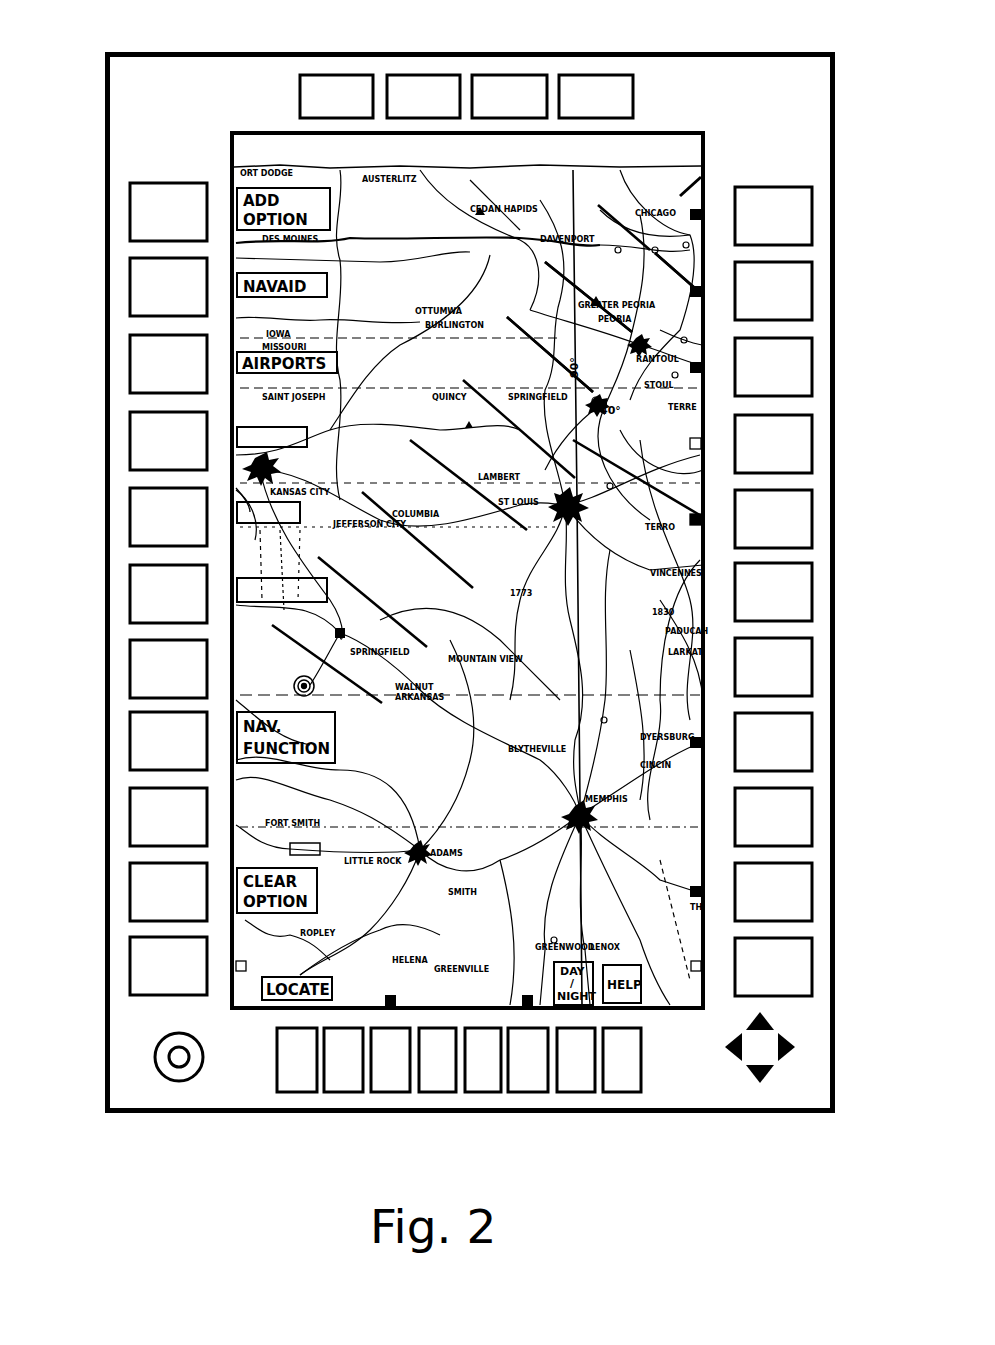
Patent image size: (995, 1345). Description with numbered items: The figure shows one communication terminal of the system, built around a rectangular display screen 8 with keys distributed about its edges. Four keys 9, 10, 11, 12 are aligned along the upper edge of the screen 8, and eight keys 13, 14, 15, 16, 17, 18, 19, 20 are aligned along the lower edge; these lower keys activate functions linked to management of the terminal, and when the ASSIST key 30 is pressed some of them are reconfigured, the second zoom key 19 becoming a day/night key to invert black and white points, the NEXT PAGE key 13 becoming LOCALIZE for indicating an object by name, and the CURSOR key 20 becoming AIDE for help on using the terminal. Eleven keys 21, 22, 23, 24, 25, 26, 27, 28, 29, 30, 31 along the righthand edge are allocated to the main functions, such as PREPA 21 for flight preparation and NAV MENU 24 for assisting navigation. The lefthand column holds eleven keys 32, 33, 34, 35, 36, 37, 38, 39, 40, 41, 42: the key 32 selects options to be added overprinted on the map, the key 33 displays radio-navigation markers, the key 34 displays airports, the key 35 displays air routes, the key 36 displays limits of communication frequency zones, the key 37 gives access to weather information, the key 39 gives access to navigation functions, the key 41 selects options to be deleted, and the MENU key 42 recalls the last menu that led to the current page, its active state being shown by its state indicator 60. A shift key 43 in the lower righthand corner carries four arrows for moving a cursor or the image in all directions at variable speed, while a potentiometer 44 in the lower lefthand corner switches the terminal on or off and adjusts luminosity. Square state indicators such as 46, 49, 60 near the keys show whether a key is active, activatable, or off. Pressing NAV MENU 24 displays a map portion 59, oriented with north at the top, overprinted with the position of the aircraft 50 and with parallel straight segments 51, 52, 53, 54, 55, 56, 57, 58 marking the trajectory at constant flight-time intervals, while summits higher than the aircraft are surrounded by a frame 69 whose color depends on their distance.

The display screen 8 is at (705, 131).
The key 9 is at (330, 88).
The key 10 is at (415, 88).
The key 11 is at (503, 88).
The key 12 is at (590, 88).
The NEXT PAGE key 13 is at (288, 1093).
The key 14 is at (342, 1093).
The key 15 is at (385, 1093).
The key 16 is at (440, 1093).
The key 17 is at (472, 1093).
The key 18 is at (516, 1093).
The ZOOM 2 key 19 is at (565, 1093).
The CURSOR key 20 is at (612, 1093).
The PREPA key 21 is at (802, 230).
The key 22 is at (797, 297).
The key 23 is at (800, 366).
The NAV MENU key 24 is at (800, 440).
The key 25 is at (800, 500).
The key 26 is at (800, 577).
The key 27 is at (800, 660).
The key 28 is at (800, 748).
The key 29 is at (798, 828).
The ASSIST key 30 is at (800, 907).
The key 31 is at (797, 978).
The OPTIONS TO BE ADDED key 32 is at (140, 205).
The RADIO NAV. key 33 is at (140, 282).
The AIRPORTS key 34 is at (140, 358).
The ROUTES key 35 is at (140, 436).
The LIMITS key 36 is at (140, 512).
The METEO key 37 is at (140, 588).
The key 38 is at (140, 665).
The NAVIGATION FUNCTIONS key 39 is at (140, 742).
The key 40 is at (140, 822).
The OPTIONS TO BE DELETED key 41 is at (140, 892).
The MENU key 42 is at (140, 966).
The shift key 43 is at (758, 1055).
The potentiometer 44 is at (178, 1070).
The state indicator 46 is at (703, 968).
The state indicator 49 is at (697, 449).
The position of the aircraft 50 is at (294, 689).
The straight segment 51 is at (275, 623).
The straight segment 52 is at (318, 557).
The straight segment 53 is at (250, 493).
The straight segment 54 is at (245, 430).
The straight segment 55 is at (697, 524).
The straight segment 56 is at (655, 397).
The straight segment 57 is at (660, 325).
The straight segment 58 is at (652, 250).
The map portion 59 is at (690, 190).
The state indicator 60 is at (238, 970).
The frame 69 is at (290, 849).